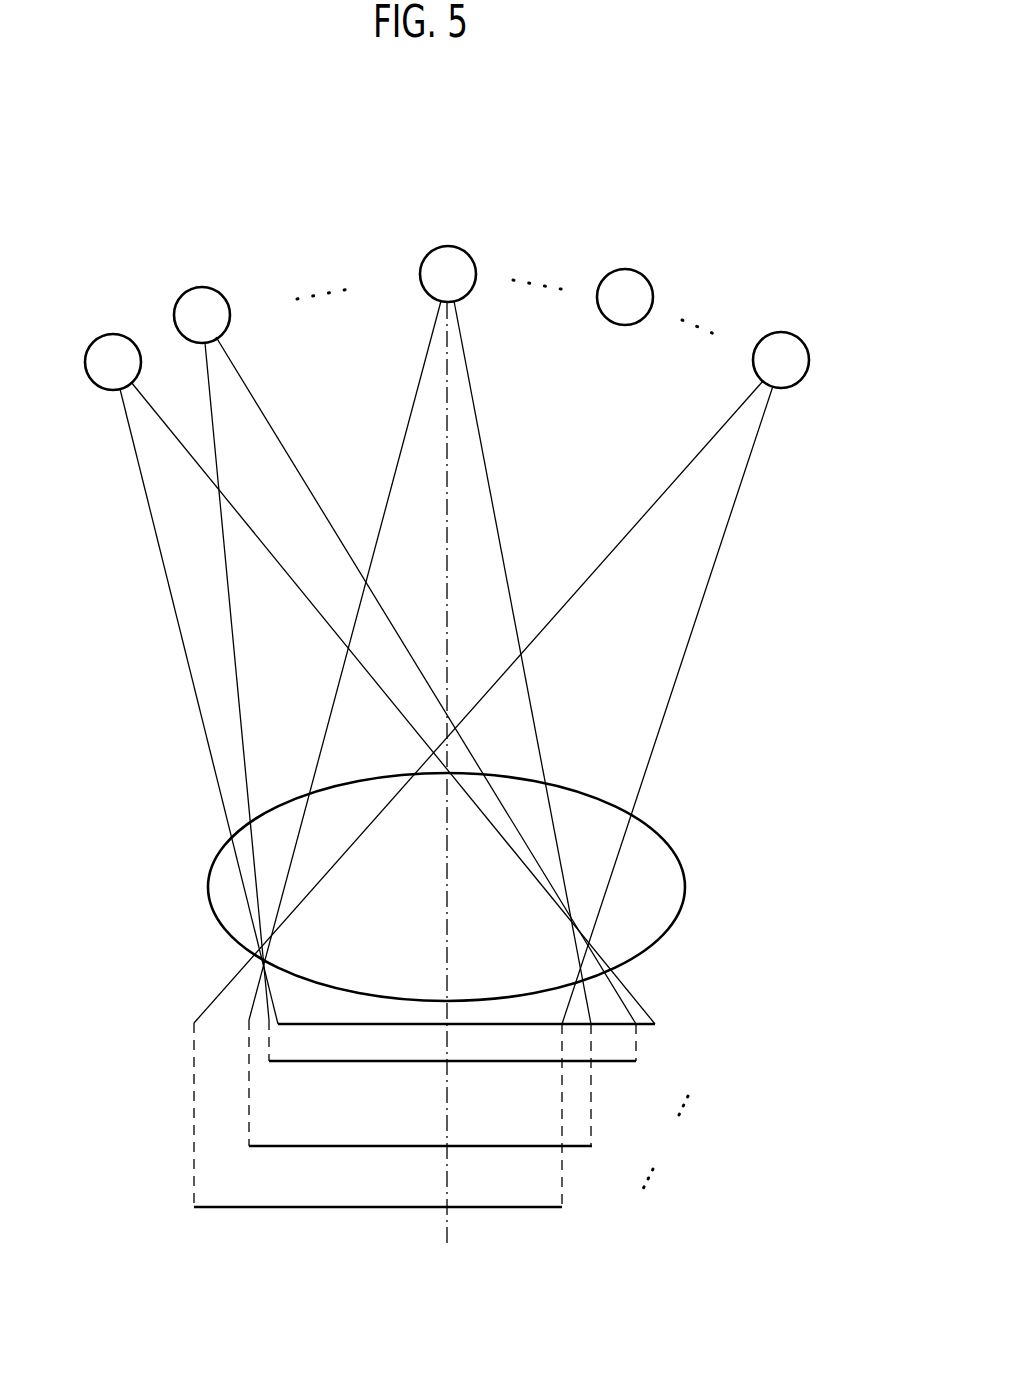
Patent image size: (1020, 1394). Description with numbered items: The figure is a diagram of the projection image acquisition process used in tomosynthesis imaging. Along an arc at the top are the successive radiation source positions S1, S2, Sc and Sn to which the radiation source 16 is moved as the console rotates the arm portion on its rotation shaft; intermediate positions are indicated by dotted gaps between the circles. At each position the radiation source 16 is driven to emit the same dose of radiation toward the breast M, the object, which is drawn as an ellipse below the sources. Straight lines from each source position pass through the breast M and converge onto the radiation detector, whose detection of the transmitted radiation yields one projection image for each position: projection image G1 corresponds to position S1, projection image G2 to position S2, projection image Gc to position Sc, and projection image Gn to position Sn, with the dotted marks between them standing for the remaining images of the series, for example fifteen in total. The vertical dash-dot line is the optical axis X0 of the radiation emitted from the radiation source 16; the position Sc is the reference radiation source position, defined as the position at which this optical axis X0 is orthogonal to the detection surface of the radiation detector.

The radiation source position S1 is at (370, 663).
The radiation source position S2 is at (405, 638).
The reference radiation source position Sc is at (420, 617).
The radiation source position Sn is at (501, 659).
The radiation source 16 is at (436, 659).
The optical axis X0 is at (447, 437).
The breast M is at (686, 887).
The projection image G1 is at (655, 1024).
The projection image G2 is at (636, 1061).
The projection image Gc is at (592, 1146).
The projection image Gn is at (562, 1207).